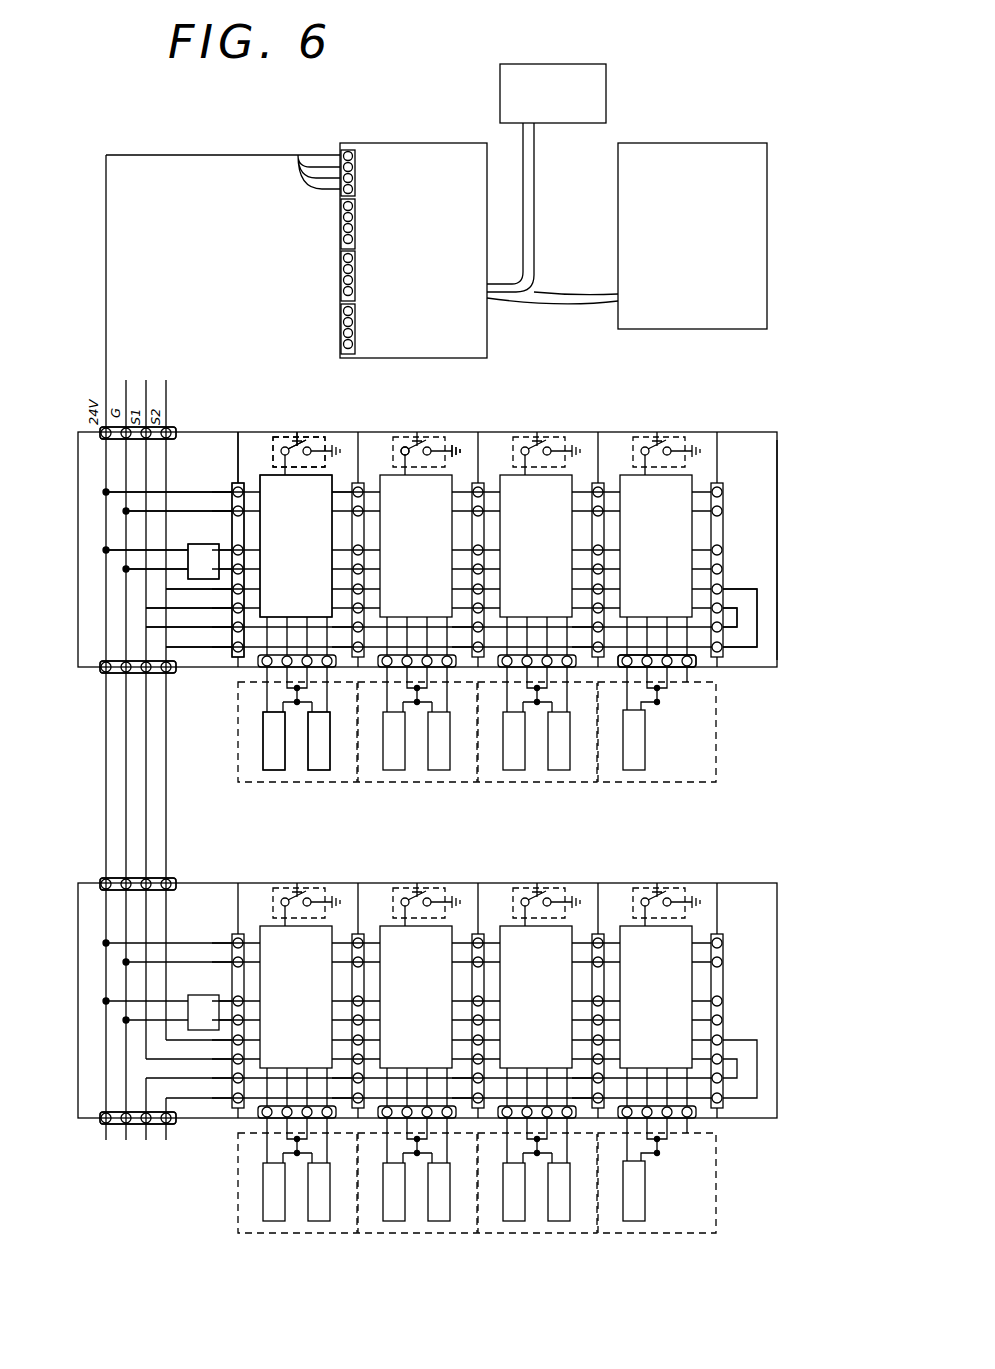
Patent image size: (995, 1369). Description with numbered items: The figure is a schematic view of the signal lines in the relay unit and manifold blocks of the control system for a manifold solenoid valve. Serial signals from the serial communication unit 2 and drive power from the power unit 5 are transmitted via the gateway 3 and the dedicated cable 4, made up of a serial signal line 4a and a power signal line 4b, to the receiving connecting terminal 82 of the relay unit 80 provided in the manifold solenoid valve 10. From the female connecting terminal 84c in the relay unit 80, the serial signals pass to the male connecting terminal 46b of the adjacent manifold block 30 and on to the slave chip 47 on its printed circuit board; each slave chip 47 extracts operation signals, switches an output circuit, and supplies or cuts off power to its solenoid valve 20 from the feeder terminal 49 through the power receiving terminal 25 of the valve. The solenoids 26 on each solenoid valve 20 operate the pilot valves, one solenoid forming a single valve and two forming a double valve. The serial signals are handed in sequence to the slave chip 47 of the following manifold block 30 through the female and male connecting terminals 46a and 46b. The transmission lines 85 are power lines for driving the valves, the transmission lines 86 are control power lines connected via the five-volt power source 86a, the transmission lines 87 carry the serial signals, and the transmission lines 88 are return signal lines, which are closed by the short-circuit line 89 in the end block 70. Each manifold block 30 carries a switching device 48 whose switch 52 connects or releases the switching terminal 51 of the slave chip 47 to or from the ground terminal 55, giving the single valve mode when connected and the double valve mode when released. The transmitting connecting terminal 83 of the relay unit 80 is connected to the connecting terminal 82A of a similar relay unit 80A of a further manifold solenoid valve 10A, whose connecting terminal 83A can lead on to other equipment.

The serial communication unit 2 is at (721, 143).
The gateway 3 is at (436, 143).
The dedicated cable 4 is at (106, 212).
The serial signal line 4a is at (148, 392).
The power signal line 4b is at (126, 392).
The power unit 5 is at (606, 84).
The manifold solenoid valve 10 is at (796, 431).
The manifold solenoid valve 10A is at (799, 895).
The solenoid valve 20 is at (280, 783).
The power receiving terminal 25 is at (678, 668).
The solenoid 26 is at (285, 771).
The manifold block 30 is at (337, 432).
The female connecting terminal 46a is at (350, 493).
The male connecting terminal 46b is at (238, 482).
The slave chip 47 is at (283, 574).
The switching device 48 is at (310, 420).
The feeder terminal 49 is at (694, 660).
The switching terminal 51 is at (403, 447).
The switch 52 is at (286, 440).
The ground terminal 55 is at (429, 443).
The end block 70 is at (777, 510).
The relay unit 80 is at (201, 423).
The relay unit 80A is at (203, 869).
The receiving connecting terminal 82 is at (100, 437).
The connecting terminal 82A is at (102, 882).
The transmitting connecting terminal 83 is at (102, 676).
The connecting terminal 83A is at (102, 1128).
The female connecting terminal 84c is at (234, 483).
The transmission lines 85 is at (172, 514).
The transmission lines 86 is at (172, 572).
The 5V power source 86a is at (213, 551).
The transmission lines 87 is at (172, 611).
The transmission lines 88 is at (172, 649).
The short-circuit line 89 is at (757, 624).